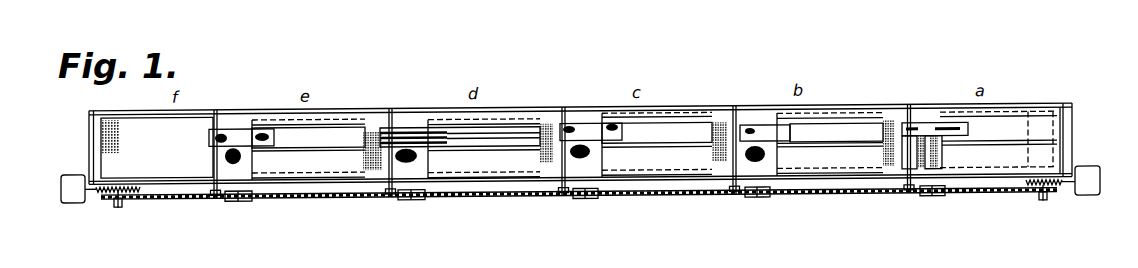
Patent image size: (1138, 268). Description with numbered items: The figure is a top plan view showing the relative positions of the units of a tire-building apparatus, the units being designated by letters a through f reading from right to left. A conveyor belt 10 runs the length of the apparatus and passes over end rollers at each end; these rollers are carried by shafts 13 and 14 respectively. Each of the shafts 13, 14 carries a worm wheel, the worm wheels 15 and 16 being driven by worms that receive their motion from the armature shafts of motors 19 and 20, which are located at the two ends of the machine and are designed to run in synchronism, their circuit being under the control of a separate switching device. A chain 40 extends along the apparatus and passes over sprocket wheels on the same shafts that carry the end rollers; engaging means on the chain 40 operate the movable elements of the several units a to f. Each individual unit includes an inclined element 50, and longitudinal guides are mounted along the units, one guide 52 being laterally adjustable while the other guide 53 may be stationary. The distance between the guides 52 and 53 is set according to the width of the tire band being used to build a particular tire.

The conveyor belt 10 is at (157, 147).
The shaft 13 is at (117, 210).
The shaft 14 is at (1043, 209).
The worm wheel 15 is at (141, 191).
The worm wheel 16 is at (1018, 192).
The motor 19 is at (70, 204).
The motor 20 is at (1086, 204).
The chain 40 is at (503, 202).
The inclined element 50 is at (798, 175).
The laterally adjustable guide 52 is at (827, 155).
The stationary guide 53 is at (873, 104).